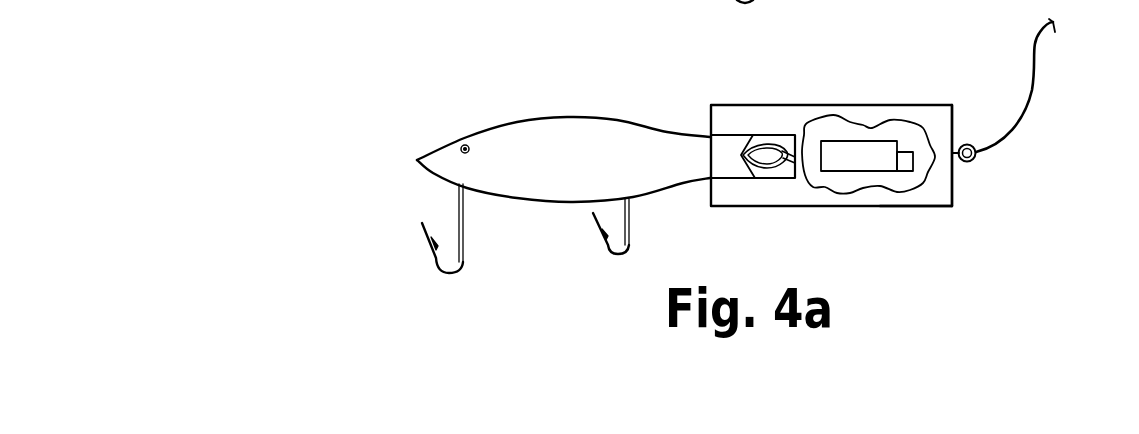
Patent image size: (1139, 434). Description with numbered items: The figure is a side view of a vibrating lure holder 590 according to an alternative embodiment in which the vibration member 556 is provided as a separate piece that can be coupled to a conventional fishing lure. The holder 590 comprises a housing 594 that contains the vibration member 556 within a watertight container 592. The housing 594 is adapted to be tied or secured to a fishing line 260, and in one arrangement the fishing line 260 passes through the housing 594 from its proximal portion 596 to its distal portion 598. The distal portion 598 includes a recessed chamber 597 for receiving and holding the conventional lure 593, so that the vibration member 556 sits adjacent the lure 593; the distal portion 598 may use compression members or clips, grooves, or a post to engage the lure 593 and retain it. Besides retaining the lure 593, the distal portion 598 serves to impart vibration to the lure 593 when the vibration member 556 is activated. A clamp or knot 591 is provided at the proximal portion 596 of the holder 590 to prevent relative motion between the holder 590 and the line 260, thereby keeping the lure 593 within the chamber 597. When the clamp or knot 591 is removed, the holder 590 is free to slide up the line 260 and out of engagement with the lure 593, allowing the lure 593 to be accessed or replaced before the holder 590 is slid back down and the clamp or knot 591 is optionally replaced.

The fishing line 260 is at (1035, 62).
The vibration member 556 is at (870, 128).
The lure holder 590 is at (788, 62).
The clamp or knot 591 is at (968, 143).
The watertight container 592 is at (825, 192).
The conventional lure 593 is at (518, 135).
The housing 594 is at (907, 206).
The proximal portion 596 is at (953, 181).
The recessed chamber 597 is at (733, 137).
The distal portion 598 is at (708, 201).